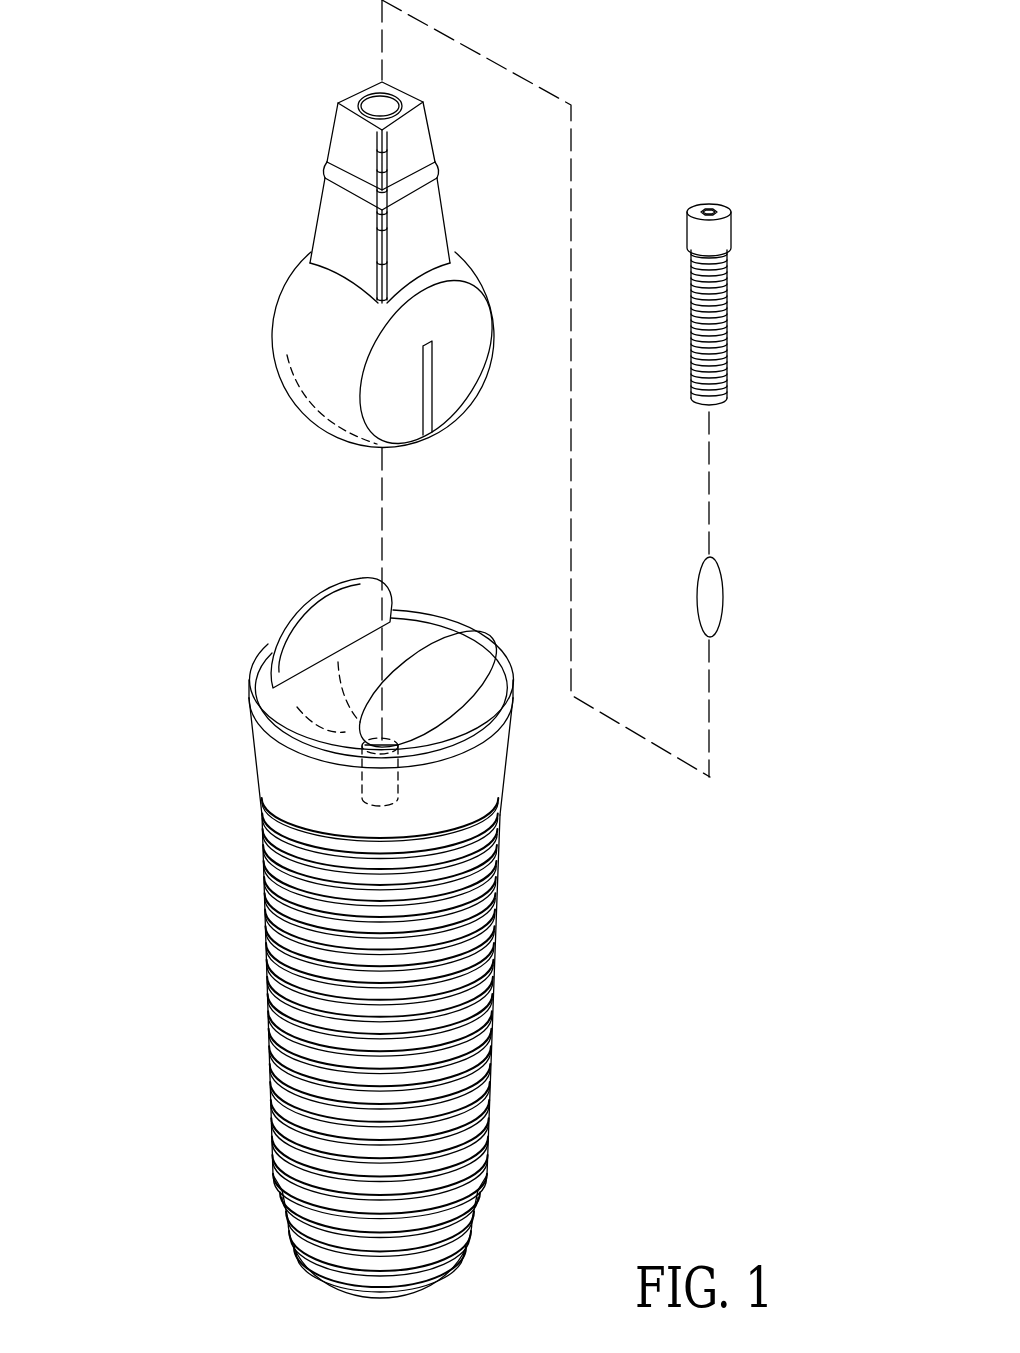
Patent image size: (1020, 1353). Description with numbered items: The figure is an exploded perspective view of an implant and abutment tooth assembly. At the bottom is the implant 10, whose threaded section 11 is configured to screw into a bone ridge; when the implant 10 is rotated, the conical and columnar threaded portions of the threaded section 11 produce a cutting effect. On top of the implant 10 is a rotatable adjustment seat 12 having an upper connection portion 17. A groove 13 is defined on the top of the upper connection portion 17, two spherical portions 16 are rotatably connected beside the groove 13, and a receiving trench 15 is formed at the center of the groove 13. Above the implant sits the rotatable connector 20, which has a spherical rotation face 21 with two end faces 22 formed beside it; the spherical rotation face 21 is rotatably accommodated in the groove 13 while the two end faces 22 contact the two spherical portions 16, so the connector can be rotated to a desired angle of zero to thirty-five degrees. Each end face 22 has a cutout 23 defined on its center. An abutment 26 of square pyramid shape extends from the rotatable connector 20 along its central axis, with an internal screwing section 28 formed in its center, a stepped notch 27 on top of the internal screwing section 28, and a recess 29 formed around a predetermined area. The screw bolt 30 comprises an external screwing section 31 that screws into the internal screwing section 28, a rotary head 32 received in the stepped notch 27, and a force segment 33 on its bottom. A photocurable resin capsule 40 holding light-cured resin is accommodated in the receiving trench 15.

The implant 10 is at (230, 882).
The threaded section 11 is at (465, 1028).
The rotatable adjustment seat 12 is at (266, 600).
The groove 13 is at (402, 633).
The receiving trench 15 is at (362, 777).
The spherical portions 16 is at (332, 600).
The upper connection portion 17 is at (485, 768).
The rotatable connector 20 is at (257, 216).
The spherical rotation face 21 is at (280, 327).
The end faces 22 is at (460, 357).
The cutout 23 is at (428, 412).
The abutment 26 is at (432, 227).
The stepped notch 27 is at (375, 98).
The internal screwing section 28 is at (338, 73).
The recess 29 is at (330, 170).
The screw bolt 30 is at (746, 228).
The external screwing section 31 is at (728, 282).
The rotary head 32 is at (702, 233).
The force segment 33 is at (715, 404).
The photocurable resin capsule 40 is at (713, 597).